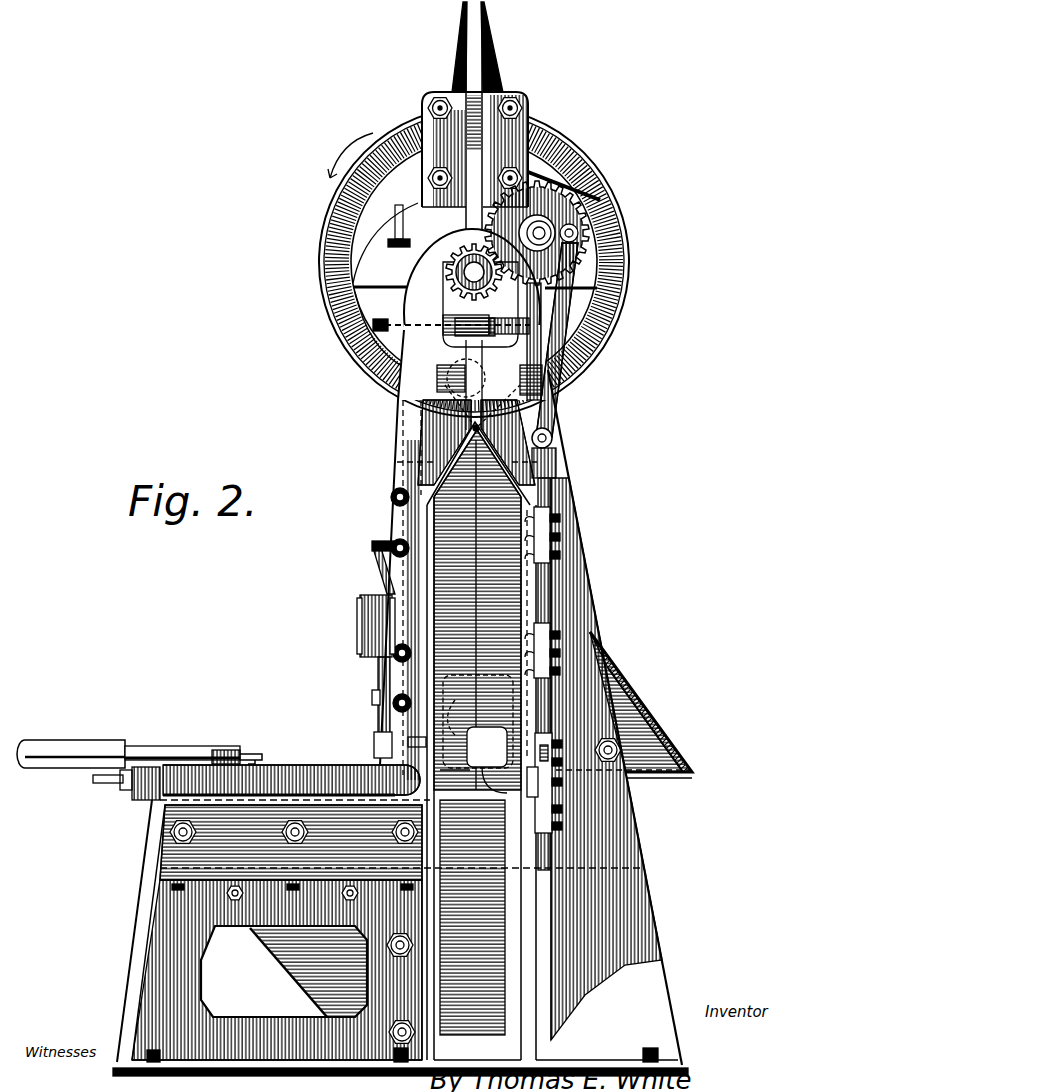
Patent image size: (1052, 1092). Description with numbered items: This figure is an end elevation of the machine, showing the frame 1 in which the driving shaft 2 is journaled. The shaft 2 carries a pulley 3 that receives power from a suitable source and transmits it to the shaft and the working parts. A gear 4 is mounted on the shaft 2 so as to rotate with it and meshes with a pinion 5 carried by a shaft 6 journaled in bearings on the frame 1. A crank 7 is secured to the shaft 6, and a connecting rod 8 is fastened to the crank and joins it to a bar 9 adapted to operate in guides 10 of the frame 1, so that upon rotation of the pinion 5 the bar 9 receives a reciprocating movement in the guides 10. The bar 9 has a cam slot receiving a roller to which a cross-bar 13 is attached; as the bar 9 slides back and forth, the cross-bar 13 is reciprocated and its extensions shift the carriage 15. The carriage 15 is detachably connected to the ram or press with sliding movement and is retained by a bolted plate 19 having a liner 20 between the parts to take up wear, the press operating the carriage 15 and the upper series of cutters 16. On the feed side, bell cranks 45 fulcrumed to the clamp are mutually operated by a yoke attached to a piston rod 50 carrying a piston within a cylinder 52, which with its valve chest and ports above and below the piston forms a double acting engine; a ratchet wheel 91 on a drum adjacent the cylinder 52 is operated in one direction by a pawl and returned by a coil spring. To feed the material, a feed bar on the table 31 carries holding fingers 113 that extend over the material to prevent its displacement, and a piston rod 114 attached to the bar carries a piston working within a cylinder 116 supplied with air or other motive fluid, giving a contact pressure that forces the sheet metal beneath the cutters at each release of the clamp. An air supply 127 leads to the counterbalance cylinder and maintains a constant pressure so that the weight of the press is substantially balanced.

The frame 1 is at (402, 652).
The driving shaft 2 is at (470, 270).
The pulley 3 is at (600, 333).
The gear 4 is at (447, 288).
The pinion 5 is at (557, 213).
The shaft 6 is at (550, 228).
The crank 7 is at (577, 236).
The connecting rod 8 is at (575, 330).
The bar 9 is at (552, 612).
The guides 10 is at (553, 530).
The cross-bar 13 is at (527, 800).
The carriage 15 is at (513, 733).
The upper series of cutters 16 is at (452, 766).
The bolted plate 19 is at (455, 687).
The liner 20 is at (462, 719).
The table 31 is at (340, 770).
The bell cranks 45 is at (372, 552).
The piston rod 50 is at (376, 580).
The cylinder 52 is at (360, 628).
The ratchet wheel 91 is at (378, 673).
The holding fingers 113 is at (252, 755).
The piston rod 114 is at (165, 752).
The cylinder 116 is at (55, 748).
The air supply 127 is at (404, 240).